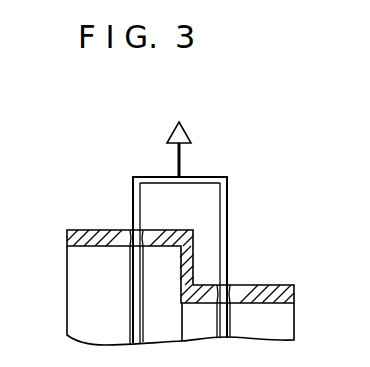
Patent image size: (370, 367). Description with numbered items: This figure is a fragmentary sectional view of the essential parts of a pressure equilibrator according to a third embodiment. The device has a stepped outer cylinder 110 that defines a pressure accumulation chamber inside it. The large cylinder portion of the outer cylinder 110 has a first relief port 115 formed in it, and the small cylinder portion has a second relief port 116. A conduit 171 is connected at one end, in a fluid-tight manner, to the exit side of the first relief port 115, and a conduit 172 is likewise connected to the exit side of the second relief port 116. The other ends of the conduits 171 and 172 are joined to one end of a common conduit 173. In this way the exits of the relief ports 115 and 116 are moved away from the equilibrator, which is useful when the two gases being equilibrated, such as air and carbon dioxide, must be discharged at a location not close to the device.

The stepped outer cylinder 110 is at (86, 225).
The first relief port 115 is at (132, 228).
The second relief port 116 is at (228, 284).
The conduit 171 is at (133, 180).
The conduit 172 is at (228, 193).
The common conduit 173 is at (176, 151).